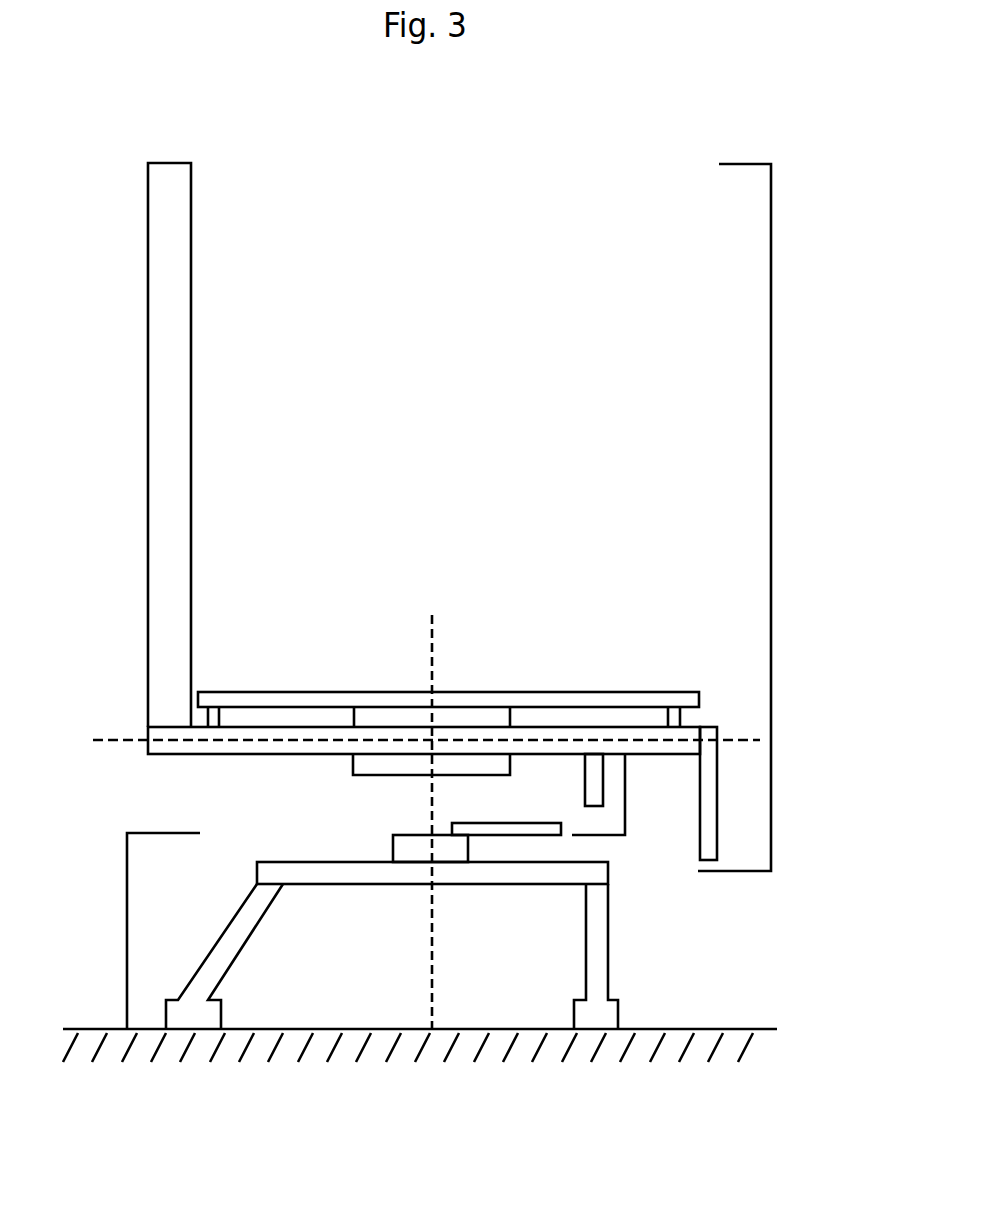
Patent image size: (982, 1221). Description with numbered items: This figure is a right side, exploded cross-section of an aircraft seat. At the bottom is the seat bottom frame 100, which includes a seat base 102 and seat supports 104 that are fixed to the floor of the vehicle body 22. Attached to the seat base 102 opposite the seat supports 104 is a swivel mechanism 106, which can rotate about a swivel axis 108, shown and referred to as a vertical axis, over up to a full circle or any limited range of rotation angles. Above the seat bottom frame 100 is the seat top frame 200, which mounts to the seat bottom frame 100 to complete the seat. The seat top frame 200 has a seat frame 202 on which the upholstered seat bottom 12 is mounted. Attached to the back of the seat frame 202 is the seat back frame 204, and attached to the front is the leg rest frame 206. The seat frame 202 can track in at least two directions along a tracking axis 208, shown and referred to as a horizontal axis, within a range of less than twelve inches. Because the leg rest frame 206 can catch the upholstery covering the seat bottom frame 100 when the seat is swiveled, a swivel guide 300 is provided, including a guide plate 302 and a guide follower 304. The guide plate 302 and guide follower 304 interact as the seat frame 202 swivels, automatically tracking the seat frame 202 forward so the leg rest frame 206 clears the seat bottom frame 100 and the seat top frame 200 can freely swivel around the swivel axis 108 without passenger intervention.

The upholstered seat bottom 12 is at (287, 700).
The vehicle body 22 is at (683, 1029).
The seat bottom frame 100 is at (127, 937).
The seat base 102 is at (316, 872).
The seat supports 104 is at (227, 955).
The swivel mechanism 106 is at (393, 843).
The swivel axis 108 is at (433, 642).
The seat top frame 200 is at (771, 484).
The seat frame 202 is at (353, 760).
The seat back frame 204 is at (175, 337).
The leg rest frame 206 is at (708, 800).
The tracking axis 208 is at (122, 740).
The swivel guide 300 is at (625, 800).
The guide plate 302 is at (500, 822).
The guide follower 304 is at (585, 773).